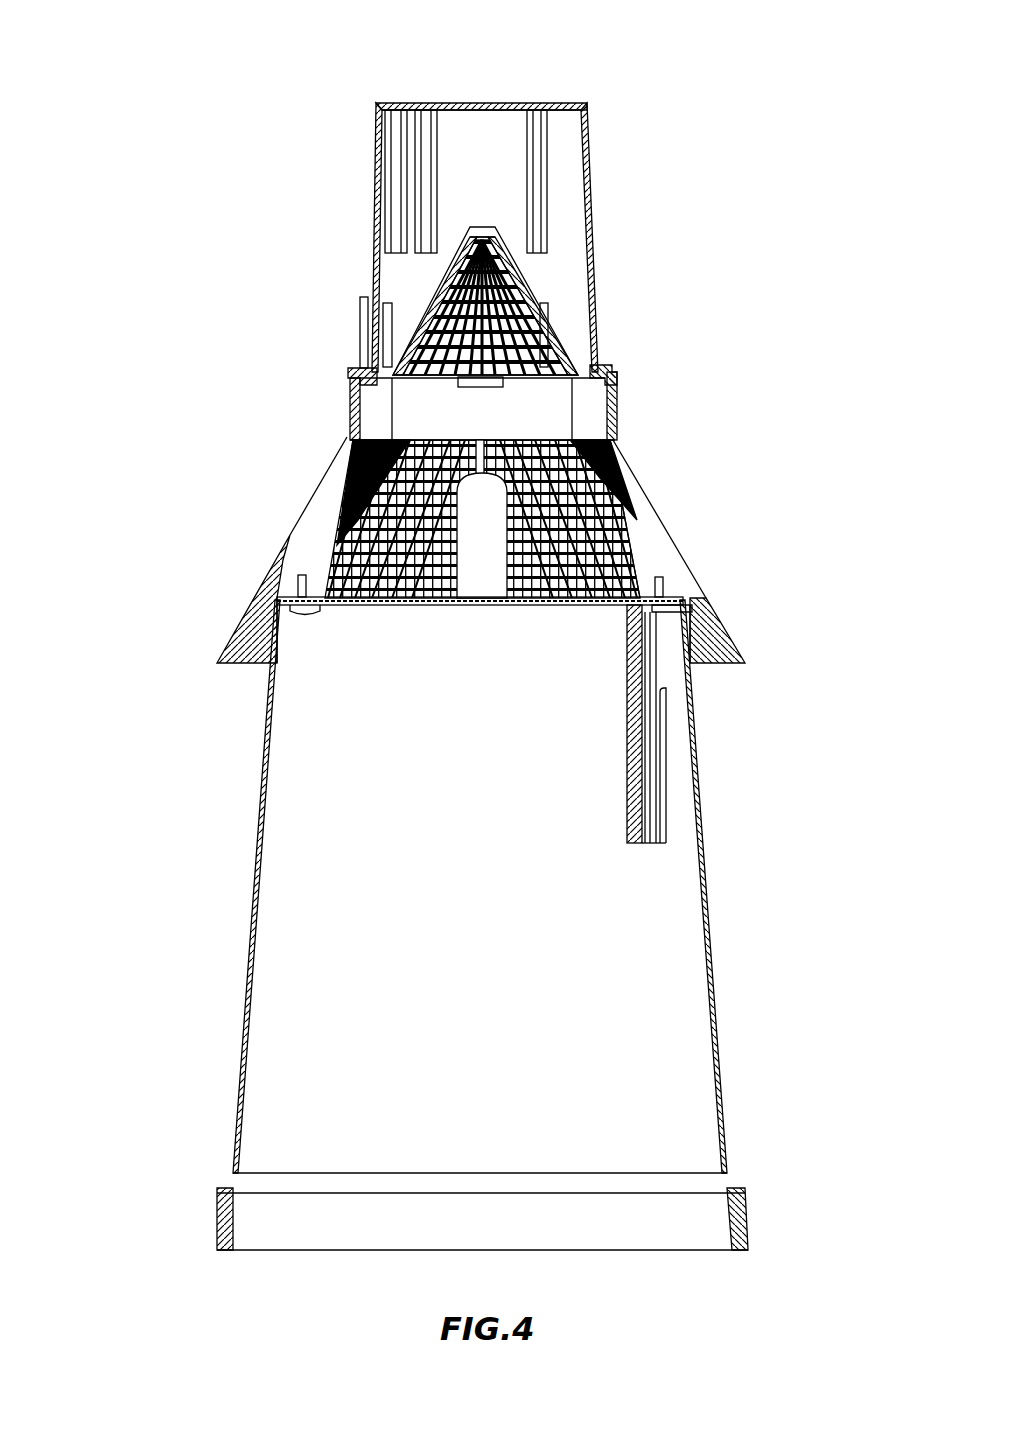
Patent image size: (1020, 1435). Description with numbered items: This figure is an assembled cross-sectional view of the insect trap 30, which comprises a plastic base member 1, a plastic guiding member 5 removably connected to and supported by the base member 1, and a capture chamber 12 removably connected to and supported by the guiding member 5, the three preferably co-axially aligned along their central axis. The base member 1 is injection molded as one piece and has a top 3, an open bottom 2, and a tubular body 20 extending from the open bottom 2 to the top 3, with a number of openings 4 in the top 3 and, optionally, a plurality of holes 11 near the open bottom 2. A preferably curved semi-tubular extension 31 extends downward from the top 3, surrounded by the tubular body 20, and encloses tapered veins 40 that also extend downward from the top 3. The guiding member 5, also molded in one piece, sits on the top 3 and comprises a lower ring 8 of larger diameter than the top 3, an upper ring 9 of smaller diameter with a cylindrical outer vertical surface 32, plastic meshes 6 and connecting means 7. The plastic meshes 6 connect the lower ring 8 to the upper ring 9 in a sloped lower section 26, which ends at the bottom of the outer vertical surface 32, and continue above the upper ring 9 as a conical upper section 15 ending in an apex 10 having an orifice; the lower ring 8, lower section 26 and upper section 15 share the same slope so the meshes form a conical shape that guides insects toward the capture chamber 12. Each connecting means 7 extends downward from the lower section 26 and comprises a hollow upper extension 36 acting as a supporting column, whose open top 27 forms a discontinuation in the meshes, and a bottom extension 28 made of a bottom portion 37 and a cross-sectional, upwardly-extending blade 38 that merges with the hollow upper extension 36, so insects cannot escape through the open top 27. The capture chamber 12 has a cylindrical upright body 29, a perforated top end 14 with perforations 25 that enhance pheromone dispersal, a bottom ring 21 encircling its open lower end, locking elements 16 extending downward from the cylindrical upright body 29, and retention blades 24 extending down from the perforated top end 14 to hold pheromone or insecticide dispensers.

The base member 1 is at (158, 1029).
The open bottom 2 is at (300, 1250).
The top 3 is at (375, 606).
The openings 4 is at (462, 606).
The guiding member 5 is at (708, 520).
The plastic meshes 6 is at (467, 307).
The connecting means 7 is at (640, 560).
The lower ring 8 is at (228, 640).
The upper ring 9 is at (350, 408).
The apex 10 is at (478, 228).
The holes 11 is at (733, 1180).
The capture chamber 12 is at (348, 93).
The perforated top end 14 is at (512, 107).
The upper section 15 is at (507, 280).
The locking elements 16 is at (490, 380).
The tubular body 20 is at (726, 1050).
The bottom ring 21 is at (605, 368).
The retention blades 24 is at (430, 181).
The perforations 25 is at (466, 107).
The lower section 26 is at (345, 450).
The open top 27 is at (628, 472).
The bottom extension 28 is at (670, 633).
The cylindrical upright body 29 is at (593, 207).
The insect trap 30 is at (170, 575).
The semi-tubular extension 31 is at (660, 803).
The outer vertical surface 32 is at (617, 403).
The hollow upper extension 36 is at (340, 522).
The bottom portion 37 is at (668, 606).
The cross-sectional, upwardly-extending blade 38 is at (662, 583).
The tapered veins 40 is at (645, 755).